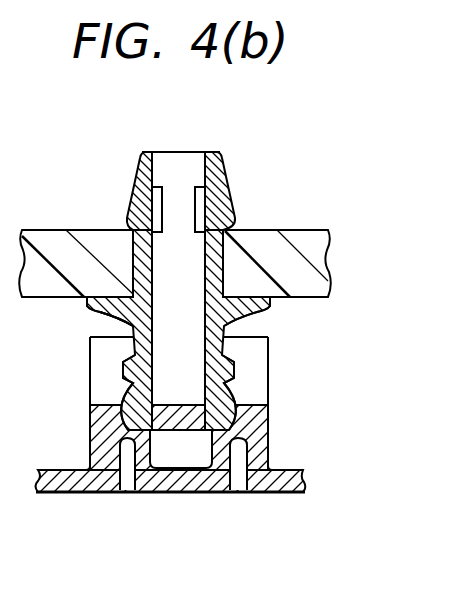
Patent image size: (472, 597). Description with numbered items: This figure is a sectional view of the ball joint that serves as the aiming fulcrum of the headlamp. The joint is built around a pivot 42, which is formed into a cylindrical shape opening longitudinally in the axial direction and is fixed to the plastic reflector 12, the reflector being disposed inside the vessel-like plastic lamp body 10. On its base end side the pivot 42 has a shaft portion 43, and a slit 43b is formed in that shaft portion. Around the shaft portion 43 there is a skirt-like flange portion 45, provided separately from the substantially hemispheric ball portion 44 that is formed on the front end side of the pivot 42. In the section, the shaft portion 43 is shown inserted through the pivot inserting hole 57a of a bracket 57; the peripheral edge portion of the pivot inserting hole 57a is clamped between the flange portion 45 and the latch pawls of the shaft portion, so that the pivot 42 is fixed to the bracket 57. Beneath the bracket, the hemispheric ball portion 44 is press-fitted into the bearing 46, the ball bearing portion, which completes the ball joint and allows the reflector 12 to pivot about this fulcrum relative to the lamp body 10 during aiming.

The lamp body 10 is at (287, 494).
The reflector 12 is at (44, 298).
The pivot 42 is at (148, 151).
The shaft portion 43 is at (181, 291).
The slit 43b is at (128, 211).
The ball portion 44 is at (123, 390).
The flange portion 45 is at (264, 317).
The bearing 46 is at (262, 382).
The bracket 57 is at (327, 229).
The pivot inserting hole 57a is at (124, 315).